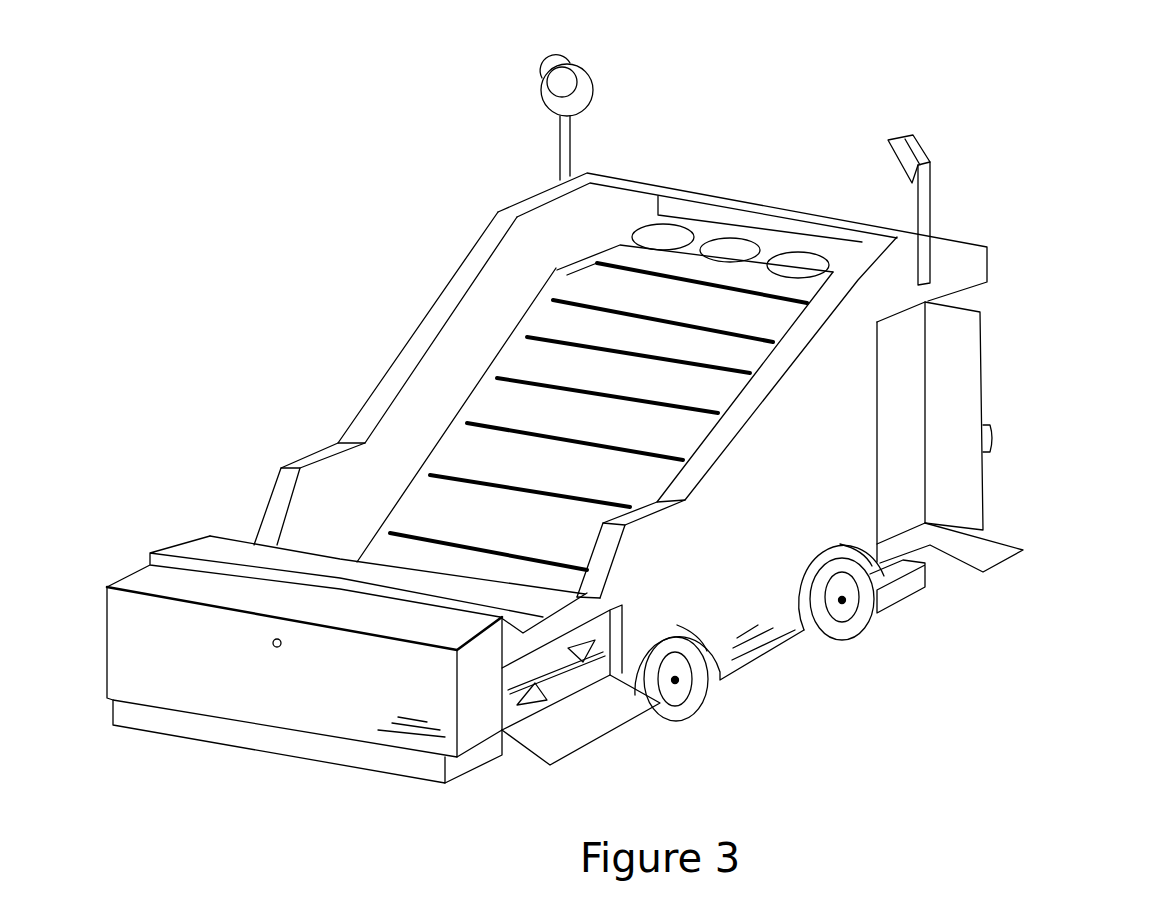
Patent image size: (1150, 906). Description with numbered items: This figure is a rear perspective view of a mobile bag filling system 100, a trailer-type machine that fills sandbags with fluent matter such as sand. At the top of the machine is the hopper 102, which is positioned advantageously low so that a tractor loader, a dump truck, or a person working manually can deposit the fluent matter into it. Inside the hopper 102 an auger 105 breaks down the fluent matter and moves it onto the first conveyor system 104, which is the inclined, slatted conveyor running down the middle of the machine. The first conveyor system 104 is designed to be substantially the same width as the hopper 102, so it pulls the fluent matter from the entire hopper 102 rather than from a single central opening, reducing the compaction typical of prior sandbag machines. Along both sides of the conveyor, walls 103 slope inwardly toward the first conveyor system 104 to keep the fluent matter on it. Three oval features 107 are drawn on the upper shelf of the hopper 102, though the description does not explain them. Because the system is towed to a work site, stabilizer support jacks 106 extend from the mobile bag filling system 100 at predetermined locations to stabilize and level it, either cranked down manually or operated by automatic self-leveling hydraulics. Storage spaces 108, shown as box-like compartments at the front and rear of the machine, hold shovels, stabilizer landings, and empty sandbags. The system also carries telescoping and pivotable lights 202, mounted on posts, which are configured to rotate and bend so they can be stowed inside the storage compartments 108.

The mobile bag filling system 100 is at (277, 130).
The hopper 102 is at (196, 553).
The walls 103 is at (335, 468).
The first conveyor system 104 is at (567, 337).
The auger 105 is at (350, 348).
The stabilizer support jacks 106 is at (910, 597).
The hopper openings 107 is at (800, 252).
The storage spaces 108 is at (120, 658).
The lights 202 is at (541, 77).